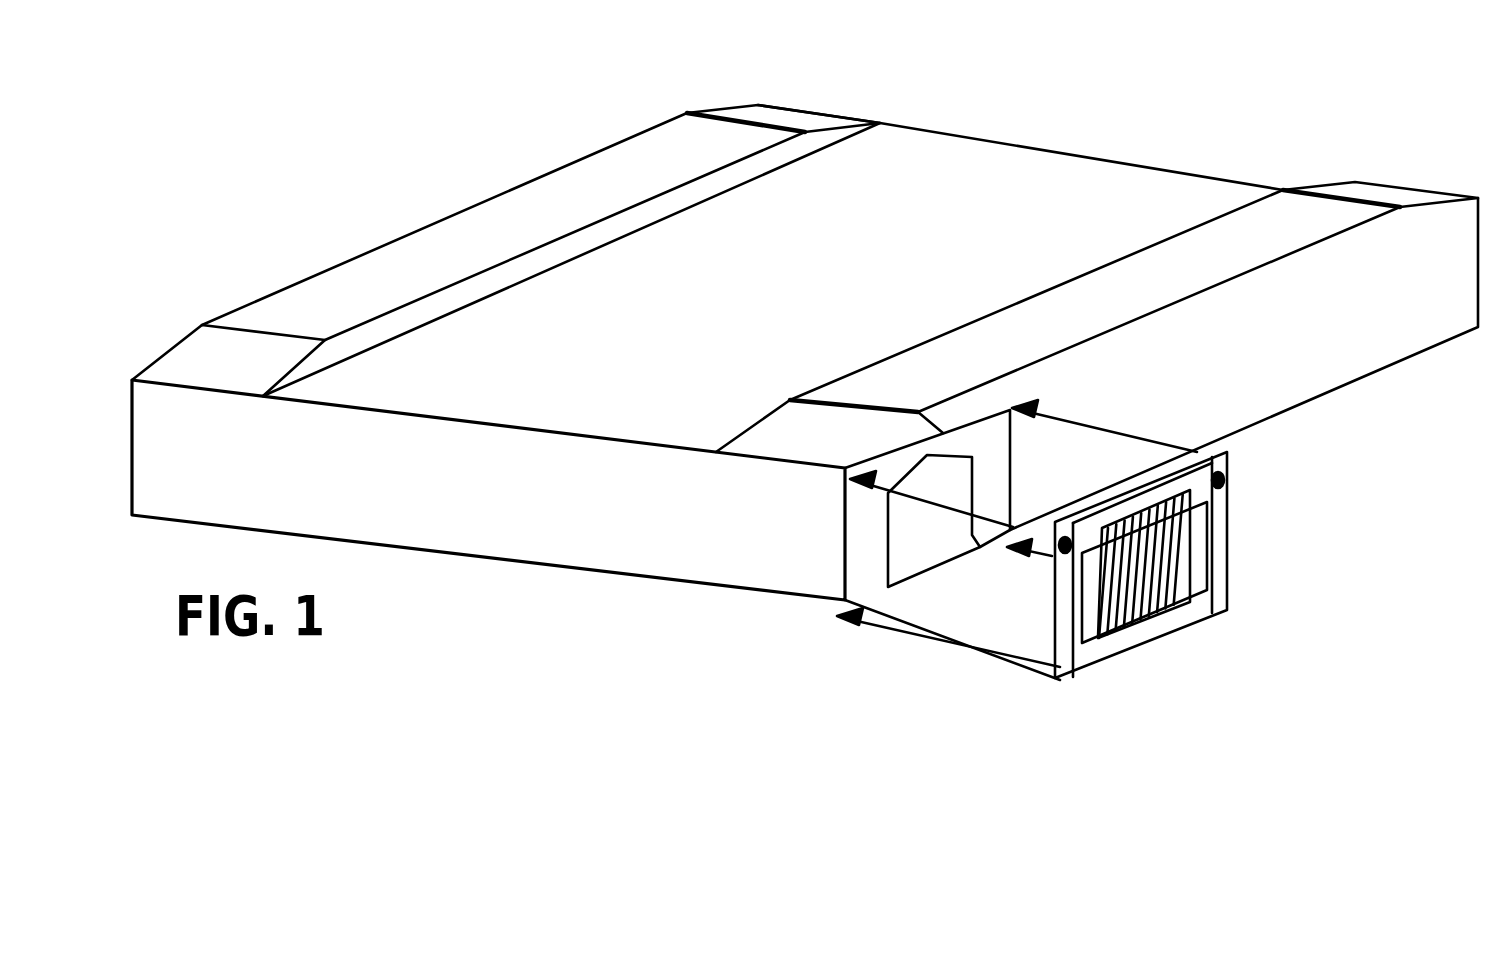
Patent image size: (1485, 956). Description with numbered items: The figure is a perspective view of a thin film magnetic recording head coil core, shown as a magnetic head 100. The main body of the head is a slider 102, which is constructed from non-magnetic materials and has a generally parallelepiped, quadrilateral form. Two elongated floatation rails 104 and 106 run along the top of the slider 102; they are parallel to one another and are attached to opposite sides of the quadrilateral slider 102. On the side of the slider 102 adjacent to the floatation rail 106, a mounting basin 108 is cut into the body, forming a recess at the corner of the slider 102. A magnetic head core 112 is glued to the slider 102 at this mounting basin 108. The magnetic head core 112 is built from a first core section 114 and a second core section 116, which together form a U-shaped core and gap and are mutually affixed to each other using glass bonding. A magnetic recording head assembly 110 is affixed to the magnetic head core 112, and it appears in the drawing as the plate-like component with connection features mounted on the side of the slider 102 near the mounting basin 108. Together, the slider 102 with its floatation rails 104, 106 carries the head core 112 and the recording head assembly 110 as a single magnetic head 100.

The magnetic head 100 is at (292, 258).
The slider 102 is at (1120, 140).
The floatation rail 104 is at (605, 175).
The floatation rail 106 is at (1230, 230).
The mounting basin 108 is at (918, 470).
The magnetic recording head assembly 110 is at (1222, 553).
The magnetic head core 112 is at (838, 575).
The first core section 114 is at (908, 552).
The second core section 116 is at (990, 430).